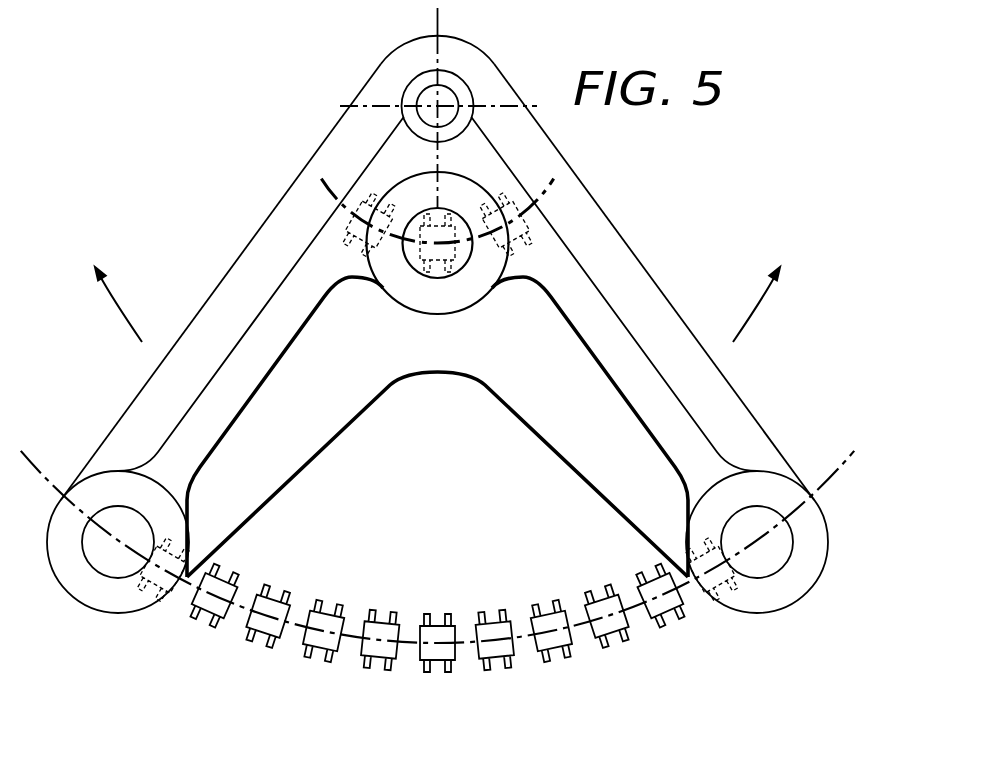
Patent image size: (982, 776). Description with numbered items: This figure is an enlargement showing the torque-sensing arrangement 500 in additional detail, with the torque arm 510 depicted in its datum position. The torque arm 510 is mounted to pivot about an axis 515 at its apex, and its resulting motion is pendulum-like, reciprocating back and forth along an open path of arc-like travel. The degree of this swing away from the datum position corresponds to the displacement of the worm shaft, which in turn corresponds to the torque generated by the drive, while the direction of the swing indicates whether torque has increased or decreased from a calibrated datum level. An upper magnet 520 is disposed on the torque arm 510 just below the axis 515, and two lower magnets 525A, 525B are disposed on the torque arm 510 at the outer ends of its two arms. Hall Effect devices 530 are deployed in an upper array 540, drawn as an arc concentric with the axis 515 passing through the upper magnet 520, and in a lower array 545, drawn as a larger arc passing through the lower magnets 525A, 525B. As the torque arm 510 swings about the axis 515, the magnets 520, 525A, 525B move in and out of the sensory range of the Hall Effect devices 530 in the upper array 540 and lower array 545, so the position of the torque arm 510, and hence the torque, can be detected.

The scanning assembly 500 is at (286, 121).
The torque arm 510 is at (372, 359).
The axis 515 is at (440, 104).
The upper magnet 520 is at (473, 297).
The lower magnet 525A is at (93, 598).
The lower magnet 525B is at (778, 600).
The Hall Effect devices 530 is at (195, 597).
The upper array 540 is at (553, 188).
The lower array 545 is at (849, 461).